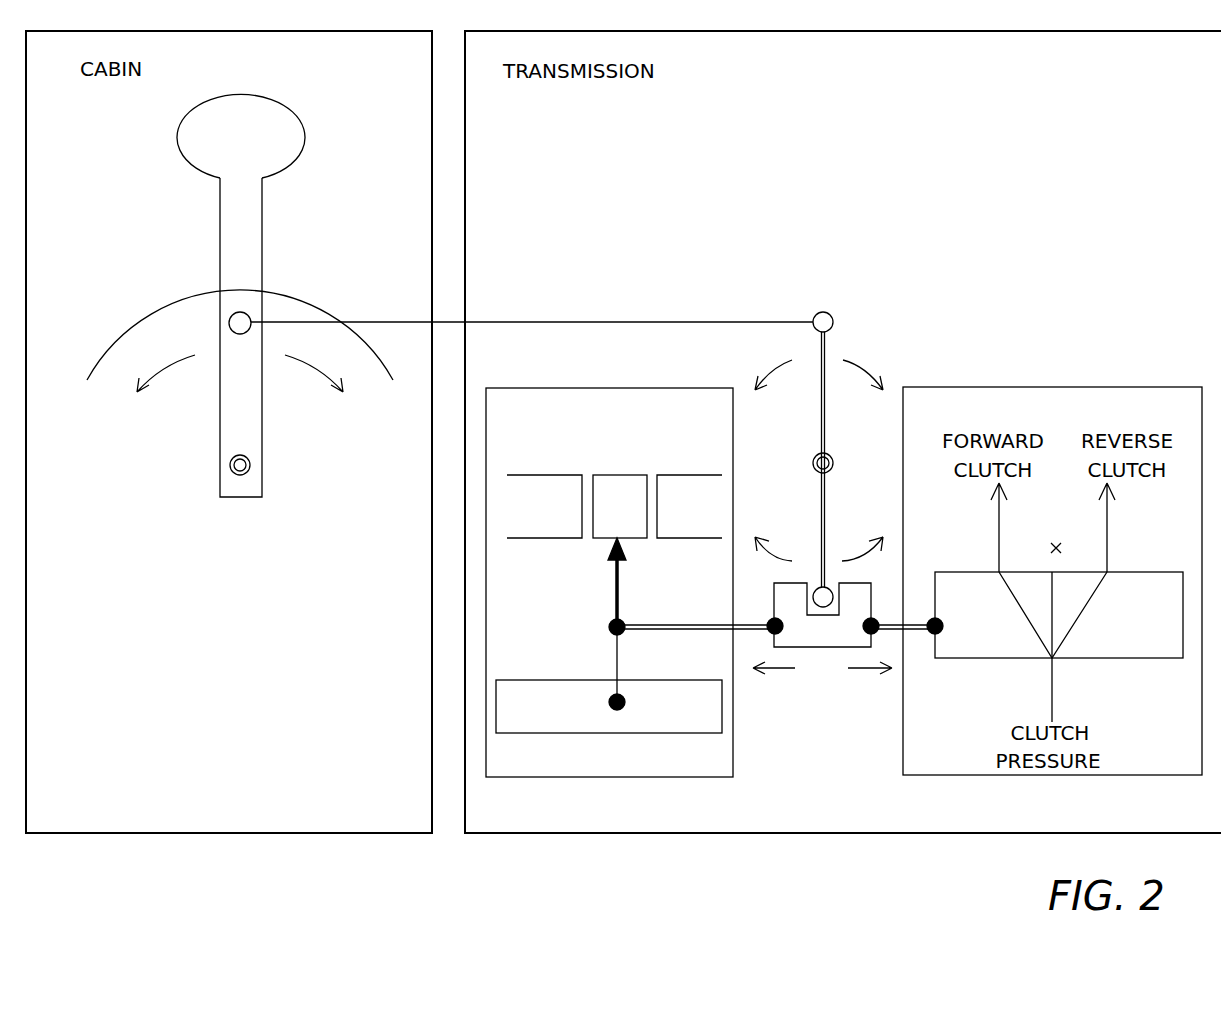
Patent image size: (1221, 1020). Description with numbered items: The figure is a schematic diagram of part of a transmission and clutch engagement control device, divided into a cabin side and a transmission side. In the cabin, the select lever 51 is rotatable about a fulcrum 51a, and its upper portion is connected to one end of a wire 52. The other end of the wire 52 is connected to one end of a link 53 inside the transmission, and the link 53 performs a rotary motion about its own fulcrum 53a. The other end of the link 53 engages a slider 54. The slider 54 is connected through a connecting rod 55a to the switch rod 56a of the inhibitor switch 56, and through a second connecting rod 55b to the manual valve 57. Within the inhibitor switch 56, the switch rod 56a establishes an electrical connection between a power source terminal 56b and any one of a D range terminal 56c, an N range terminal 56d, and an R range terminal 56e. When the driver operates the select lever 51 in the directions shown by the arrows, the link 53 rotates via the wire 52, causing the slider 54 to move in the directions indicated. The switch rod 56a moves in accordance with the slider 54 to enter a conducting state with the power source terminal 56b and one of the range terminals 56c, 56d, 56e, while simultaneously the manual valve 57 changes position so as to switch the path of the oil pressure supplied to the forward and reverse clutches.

The select lever 51 is at (276, 116).
The fulcrum 51a is at (250, 461).
The wire 52 is at (570, 318).
The link 53 is at (826, 335).
The fulcrum 53a is at (814, 463).
The slider 54 is at (825, 645).
The connecting rod 55a is at (686, 628).
The connecting rod 55b is at (913, 631).
The inhibitor switch 56 is at (560, 393).
The switch rod 56a is at (615, 658).
The power source terminal 56b is at (588, 729).
The D range terminal 56c is at (545, 477).
The N range terminal 56d is at (597, 483).
The R range terminal 56e is at (670, 480).
The manual valve 57 is at (960, 586).